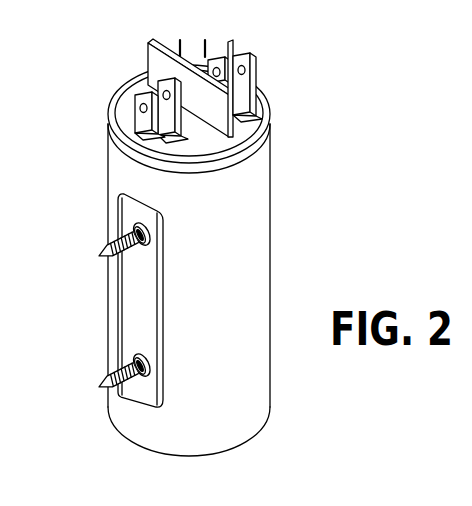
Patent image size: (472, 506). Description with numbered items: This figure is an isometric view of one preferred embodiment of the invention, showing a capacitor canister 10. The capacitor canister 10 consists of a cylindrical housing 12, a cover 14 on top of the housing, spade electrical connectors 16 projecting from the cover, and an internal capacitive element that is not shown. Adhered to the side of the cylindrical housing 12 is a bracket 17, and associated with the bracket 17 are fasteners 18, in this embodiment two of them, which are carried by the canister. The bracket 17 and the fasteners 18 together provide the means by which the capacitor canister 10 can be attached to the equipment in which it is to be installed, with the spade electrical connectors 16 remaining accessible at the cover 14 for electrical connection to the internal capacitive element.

The capacitor canister 10 is at (180, 237).
The cylindrical housing 12 is at (253, 259).
The cover 14 is at (212, 143).
The spade electrical connectors 16 is at (140, 108).
The bracket 17 is at (145, 315).
The fasteners 18 is at (98, 254).